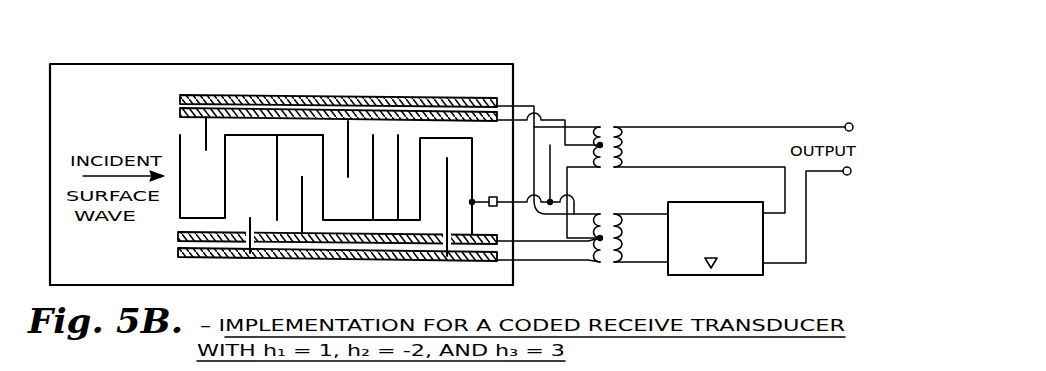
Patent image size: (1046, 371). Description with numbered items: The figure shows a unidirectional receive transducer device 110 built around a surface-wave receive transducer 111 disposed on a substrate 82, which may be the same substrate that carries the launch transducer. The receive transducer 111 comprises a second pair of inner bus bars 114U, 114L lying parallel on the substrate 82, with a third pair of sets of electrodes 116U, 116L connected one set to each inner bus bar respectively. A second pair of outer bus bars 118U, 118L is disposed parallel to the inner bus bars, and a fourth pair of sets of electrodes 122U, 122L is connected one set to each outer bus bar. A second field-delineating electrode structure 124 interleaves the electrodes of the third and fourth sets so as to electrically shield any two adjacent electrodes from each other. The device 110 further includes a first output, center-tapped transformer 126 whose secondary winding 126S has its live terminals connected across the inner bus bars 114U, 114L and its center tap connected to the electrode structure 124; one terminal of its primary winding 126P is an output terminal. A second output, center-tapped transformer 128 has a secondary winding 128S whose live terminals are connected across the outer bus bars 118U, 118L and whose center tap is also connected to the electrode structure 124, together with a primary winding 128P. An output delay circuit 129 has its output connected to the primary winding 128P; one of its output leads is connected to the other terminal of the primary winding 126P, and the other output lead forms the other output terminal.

The unidirectional receive transducer device 110 is at (531, 59).
The receive transducer 111 is at (450, 63).
The substrate 82 is at (248, 286).
The outer bus bar 118U is at (180, 95).
The inner bus bar 114U is at (180, 113).
The set of electrodes 116U is at (205, 130).
The inner bus bar 114L is at (178, 238).
The outer bus bar 118L is at (178, 253).
The set of electrodes 122L is at (250, 218).
The set of electrodes 116L is at (302, 177).
The set of electrodes 122U is at (348, 177).
The second field-delineating electrode structure 124 is at (493, 197).
The first output center-tapped transformer 126 is at (700, 152).
The secondary winding 126S is at (586, 171).
The primary winding 126P is at (628, 170).
The second output center-tapped transformer 128 is at (626, 266).
The secondary winding 128S is at (585, 263).
The primary winding 128P is at (633, 262).
The output delay circuit 129 is at (745, 277).